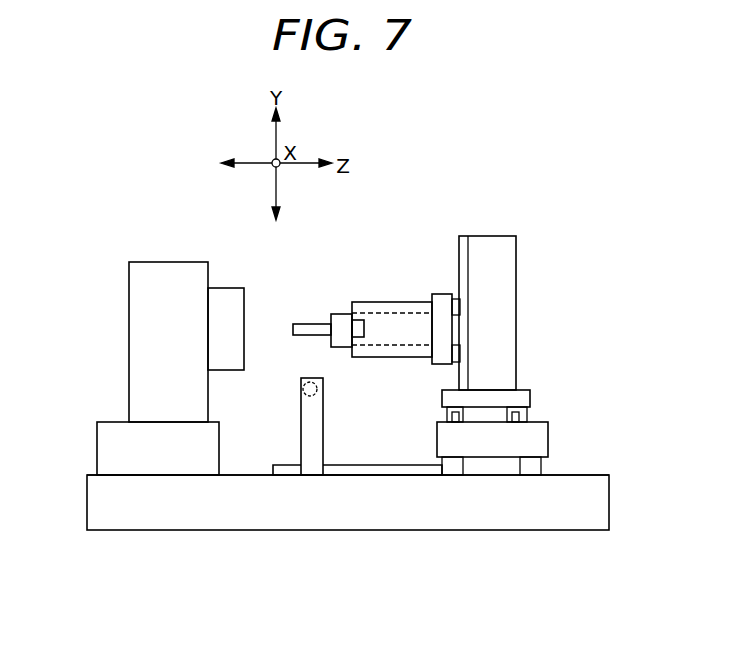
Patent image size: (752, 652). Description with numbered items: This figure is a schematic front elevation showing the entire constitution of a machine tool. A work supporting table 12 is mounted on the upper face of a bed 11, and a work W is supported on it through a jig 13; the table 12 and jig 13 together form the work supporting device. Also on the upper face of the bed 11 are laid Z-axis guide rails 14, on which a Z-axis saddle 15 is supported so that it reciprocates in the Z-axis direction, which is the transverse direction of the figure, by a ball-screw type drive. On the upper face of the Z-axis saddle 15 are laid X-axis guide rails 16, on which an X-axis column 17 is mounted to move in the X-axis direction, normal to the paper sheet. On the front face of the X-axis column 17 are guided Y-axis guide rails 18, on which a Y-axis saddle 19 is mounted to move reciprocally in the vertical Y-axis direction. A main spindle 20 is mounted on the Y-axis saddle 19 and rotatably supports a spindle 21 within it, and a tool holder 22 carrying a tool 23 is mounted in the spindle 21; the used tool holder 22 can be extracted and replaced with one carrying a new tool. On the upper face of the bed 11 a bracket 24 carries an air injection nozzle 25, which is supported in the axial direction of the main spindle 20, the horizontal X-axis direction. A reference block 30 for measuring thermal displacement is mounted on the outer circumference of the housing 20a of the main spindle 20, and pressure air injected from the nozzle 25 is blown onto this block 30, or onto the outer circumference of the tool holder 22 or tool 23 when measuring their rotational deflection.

The bed 11 is at (609, 507).
The work supporting table 12 is at (101, 445).
The jig 13 is at (132, 330).
The work W is at (235, 291).
The Z-axis guide rails 14 is at (609, 477).
The Z-axis saddle 15 is at (542, 437).
The X-axis guide rails 16 is at (526, 416).
The X-axis column 17 is at (508, 279).
The Y-axis guide rails 18 is at (463, 236).
The Y-axis saddle 19 is at (440, 294).
The main spindle 20 is at (408, 292).
The housing of the main spindle 20a is at (383, 358).
The spindle 21 is at (361, 300).
The tool holder 22 is at (331, 313).
The tool 23 is at (300, 323).
The bracket 24 is at (305, 441).
The air injection nozzle 25 is at (302, 391).
The reference block 30 is at (365, 325).